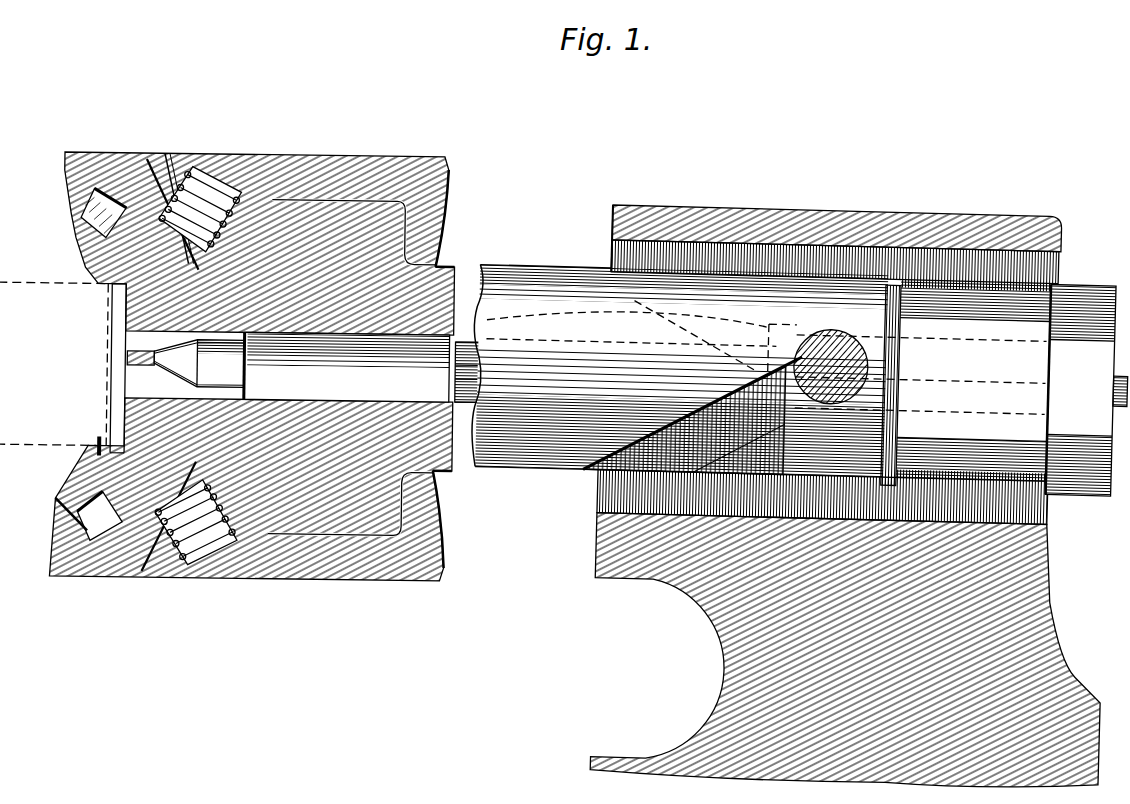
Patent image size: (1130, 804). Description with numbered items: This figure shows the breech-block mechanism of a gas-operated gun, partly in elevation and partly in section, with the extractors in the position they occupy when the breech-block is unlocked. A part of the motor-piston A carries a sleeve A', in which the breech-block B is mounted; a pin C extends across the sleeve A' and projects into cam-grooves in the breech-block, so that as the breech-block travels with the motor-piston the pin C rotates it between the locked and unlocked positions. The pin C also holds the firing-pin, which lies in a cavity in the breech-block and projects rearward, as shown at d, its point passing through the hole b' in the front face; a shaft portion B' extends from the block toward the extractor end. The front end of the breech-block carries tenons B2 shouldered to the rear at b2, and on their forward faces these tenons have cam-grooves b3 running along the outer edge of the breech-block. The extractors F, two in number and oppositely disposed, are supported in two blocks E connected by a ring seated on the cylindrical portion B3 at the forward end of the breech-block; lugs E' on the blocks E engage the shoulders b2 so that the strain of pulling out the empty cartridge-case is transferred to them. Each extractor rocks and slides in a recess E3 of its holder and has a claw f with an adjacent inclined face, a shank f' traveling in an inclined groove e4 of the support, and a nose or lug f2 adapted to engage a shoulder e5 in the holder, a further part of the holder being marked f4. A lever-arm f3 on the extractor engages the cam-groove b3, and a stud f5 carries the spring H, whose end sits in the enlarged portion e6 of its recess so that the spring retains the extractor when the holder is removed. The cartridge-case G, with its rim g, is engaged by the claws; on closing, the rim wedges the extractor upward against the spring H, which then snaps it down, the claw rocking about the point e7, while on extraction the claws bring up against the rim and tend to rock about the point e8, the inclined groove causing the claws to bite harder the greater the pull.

The motor-piston A is at (848, 630).
The sleeve A' is at (837, 227).
The breech-block B is at (761, 376).
The spindle extension B' is at (288, 366).
The tenons B2 is at (328, 217).
The cylindrical portion B3 is at (128, 318).
The pin C is at (860, 358).
The rearward projection of firing-pin d is at (1110, 372).
The blocks E is at (252, 369).
The lugs E' is at (457, 369).
The recess E3 is at (100, 188).
The extractors F is at (147, 190).
The cartridge-case G is at (63, 367).
The rim g is at (112, 345).
The spring H is at (250, 178).
The hole b' is at (103, 359).
The shoulders b2 is at (447, 195).
The cam-grooves b3 is at (212, 365).
The inclined groove e4 is at (192, 165).
The shoulder e5 is at (225, 176).
The enlarged inner end of recess e6 is at (250, 188).
The point e7 is at (168, 152).
The point e8 is at (65, 170).
The claw f is at (68, 351).
The shank f' is at (128, 366).
The nose or lug f2 is at (207, 168).
The lever-arm f3 is at (262, 403).
The lower jaw wedge f4 is at (78, 515).
The stud f5 is at (128, 300).